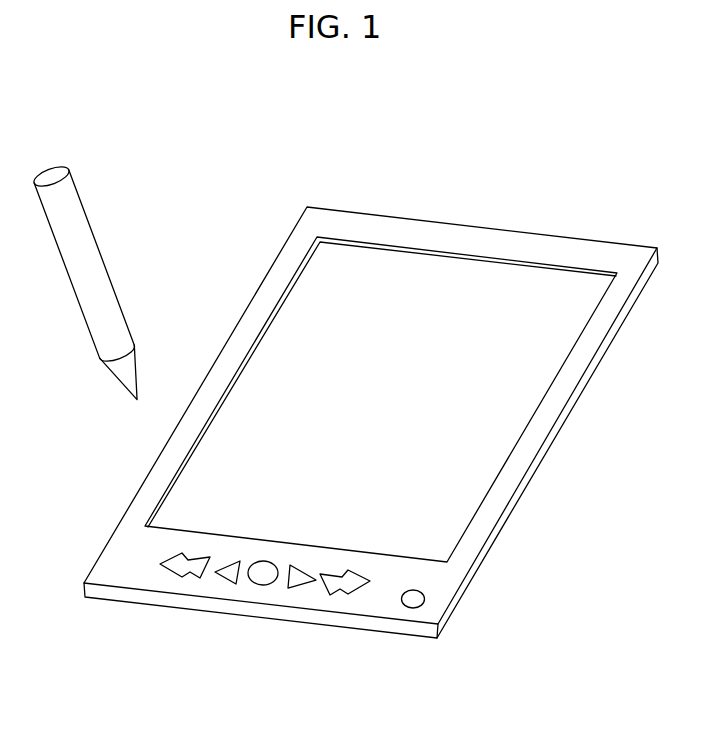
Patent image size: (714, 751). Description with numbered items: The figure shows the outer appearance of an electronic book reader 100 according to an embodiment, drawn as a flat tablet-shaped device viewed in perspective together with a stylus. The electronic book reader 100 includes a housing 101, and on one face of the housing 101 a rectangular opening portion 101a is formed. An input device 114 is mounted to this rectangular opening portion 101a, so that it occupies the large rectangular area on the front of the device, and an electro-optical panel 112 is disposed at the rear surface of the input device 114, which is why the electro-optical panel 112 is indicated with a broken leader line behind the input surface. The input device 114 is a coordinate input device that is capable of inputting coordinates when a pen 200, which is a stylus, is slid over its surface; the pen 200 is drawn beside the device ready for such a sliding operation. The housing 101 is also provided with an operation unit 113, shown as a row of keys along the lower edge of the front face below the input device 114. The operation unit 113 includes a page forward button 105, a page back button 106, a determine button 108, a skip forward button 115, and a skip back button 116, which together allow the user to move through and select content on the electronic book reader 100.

The electronic book reader 100 is at (609, 156).
The housing 101 is at (603, 356).
The rectangular opening portion 101a is at (285, 297).
The page forward button 105 is at (297, 582).
The page back button 106 is at (223, 572).
The determine button 108 is at (260, 574).
The electro-optical panel 112 is at (381, 353).
The operation unit 113 is at (230, 638).
The input device 114 is at (353, 265).
The skip forward button 115 is at (345, 628).
The skip back button 116 is at (167, 568).
The pen 200 is at (105, 286).